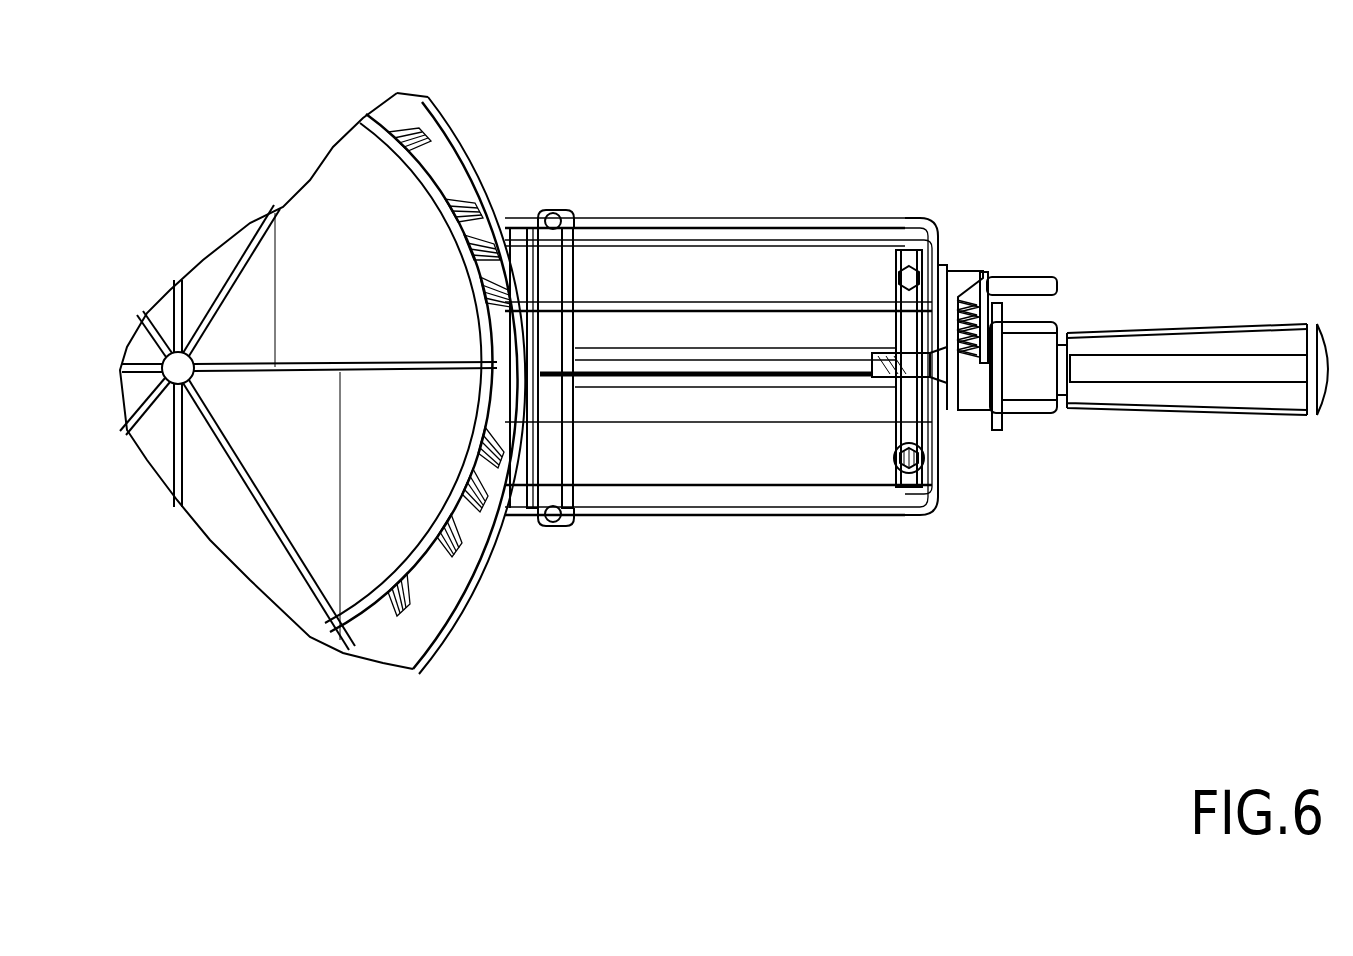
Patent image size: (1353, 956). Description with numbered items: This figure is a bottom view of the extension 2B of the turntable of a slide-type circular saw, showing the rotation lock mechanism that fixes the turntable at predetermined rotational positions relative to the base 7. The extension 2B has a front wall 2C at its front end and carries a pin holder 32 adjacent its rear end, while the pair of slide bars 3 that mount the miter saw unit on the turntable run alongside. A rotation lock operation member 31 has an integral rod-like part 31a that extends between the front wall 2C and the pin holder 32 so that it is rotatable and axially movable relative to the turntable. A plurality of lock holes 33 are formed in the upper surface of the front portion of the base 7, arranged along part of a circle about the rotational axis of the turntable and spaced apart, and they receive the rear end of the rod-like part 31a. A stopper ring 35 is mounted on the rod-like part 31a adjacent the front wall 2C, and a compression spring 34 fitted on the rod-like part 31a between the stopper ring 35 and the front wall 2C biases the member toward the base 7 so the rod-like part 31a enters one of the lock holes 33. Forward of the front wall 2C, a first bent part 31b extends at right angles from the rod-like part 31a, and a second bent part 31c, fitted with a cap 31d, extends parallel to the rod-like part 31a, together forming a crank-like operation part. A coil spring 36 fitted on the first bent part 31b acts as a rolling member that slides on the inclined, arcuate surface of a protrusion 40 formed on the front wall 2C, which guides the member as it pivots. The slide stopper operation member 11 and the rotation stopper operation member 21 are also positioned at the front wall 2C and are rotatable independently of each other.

The base 7 is at (307, 503).
The lock holes 33 is at (500, 252).
The pin holder 32 is at (553, 462).
The extension 2B is at (713, 221).
The front wall 2C is at (950, 457).
The slide bars 3 is at (627, 263).
The rotation lock operation member 31 is at (710, 372).
The rod-like part 31a is at (777, 378).
The first bent part 31b is at (977, 340).
The second bent part 31c is at (975, 268).
The cap 31d is at (1037, 280).
The compression spring 34 is at (900, 395).
The stopper ring 35 is at (873, 378).
The coil spring 36 is at (980, 317).
The protrusion 40 is at (966, 258).
The slide stopper operation member 11 is at (1047, 322).
The rotation stopper operation member 21 is at (1197, 328).